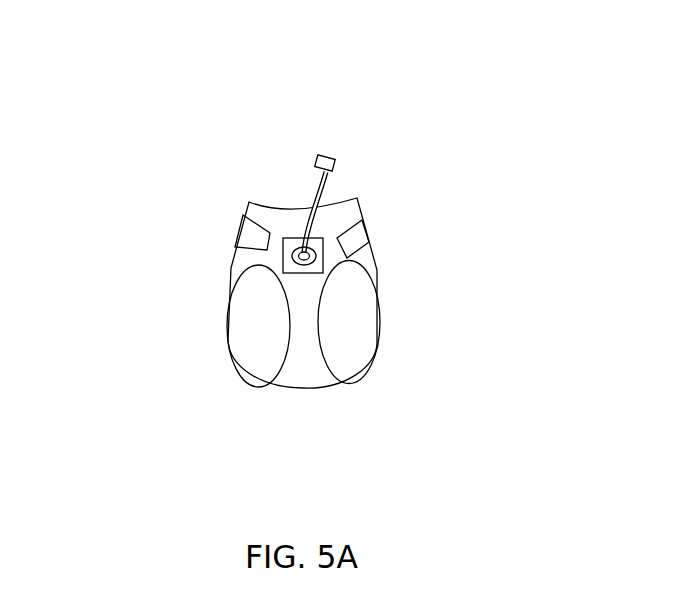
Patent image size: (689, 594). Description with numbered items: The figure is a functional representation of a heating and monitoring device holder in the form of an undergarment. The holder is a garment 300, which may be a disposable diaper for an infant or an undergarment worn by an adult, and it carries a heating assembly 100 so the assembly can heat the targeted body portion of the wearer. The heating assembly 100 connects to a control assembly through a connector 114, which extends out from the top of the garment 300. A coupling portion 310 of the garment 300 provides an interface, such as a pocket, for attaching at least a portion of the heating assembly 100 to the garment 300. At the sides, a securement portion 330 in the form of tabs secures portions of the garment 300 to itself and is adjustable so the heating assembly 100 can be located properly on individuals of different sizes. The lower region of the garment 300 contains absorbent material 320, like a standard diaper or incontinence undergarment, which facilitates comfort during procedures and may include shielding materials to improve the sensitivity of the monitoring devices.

The garment 300 is at (425, 93).
The heating assembly 100 is at (287, 239).
The connector 114 is at (322, 156).
The coupling portion 310 is at (284, 257).
The absorbent material 320 is at (312, 382).
The securement portion 330 is at (353, 238).